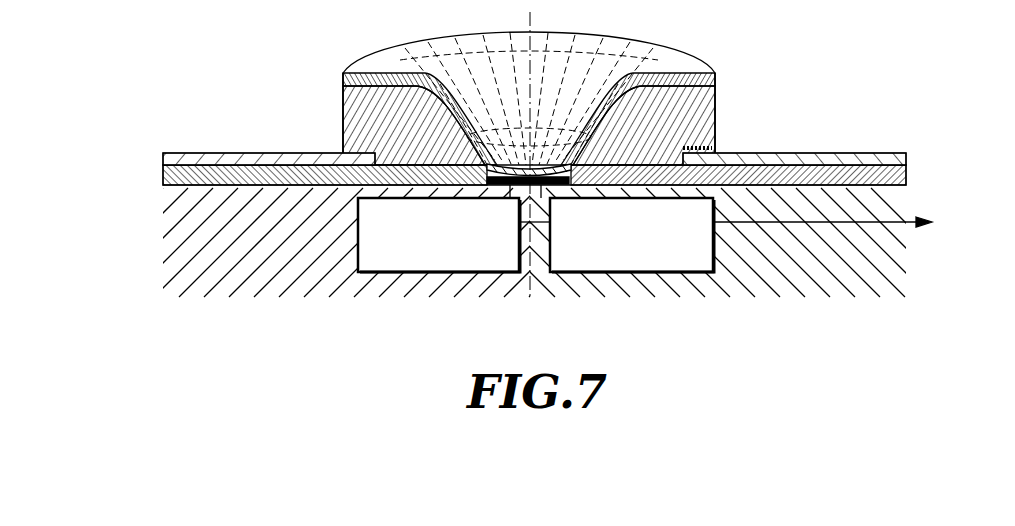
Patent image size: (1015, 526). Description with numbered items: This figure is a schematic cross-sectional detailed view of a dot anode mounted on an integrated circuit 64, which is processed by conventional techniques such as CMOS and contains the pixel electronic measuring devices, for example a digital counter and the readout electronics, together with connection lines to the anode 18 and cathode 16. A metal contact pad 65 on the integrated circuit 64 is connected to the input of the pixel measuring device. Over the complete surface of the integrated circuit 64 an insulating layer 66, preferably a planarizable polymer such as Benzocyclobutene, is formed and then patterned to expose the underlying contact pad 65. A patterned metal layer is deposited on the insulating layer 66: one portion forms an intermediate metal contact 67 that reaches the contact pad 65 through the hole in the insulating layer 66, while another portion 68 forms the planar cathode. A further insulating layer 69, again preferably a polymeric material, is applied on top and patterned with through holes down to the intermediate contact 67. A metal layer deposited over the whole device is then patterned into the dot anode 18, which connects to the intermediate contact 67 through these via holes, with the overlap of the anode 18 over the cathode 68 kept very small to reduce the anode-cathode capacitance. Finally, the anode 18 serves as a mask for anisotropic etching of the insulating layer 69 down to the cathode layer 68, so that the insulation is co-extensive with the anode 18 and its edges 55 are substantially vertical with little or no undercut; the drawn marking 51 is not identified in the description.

The cathode 16 is at (408, 58).
The anode 18 is at (643, 52).
The electrode potential (±51) 51 is at (681, 133).
The edges of the polymer insulation 55 is at (343, 138).
The integrated circuit 64 is at (435, 272).
The metal contact pad 65 is at (540, 188).
The insulating layer 66 is at (907, 174).
The intermediate metal contact 67 is at (341, 130).
The planar cathode 68 is at (256, 153).
The insulating layer 69 is at (706, 110).